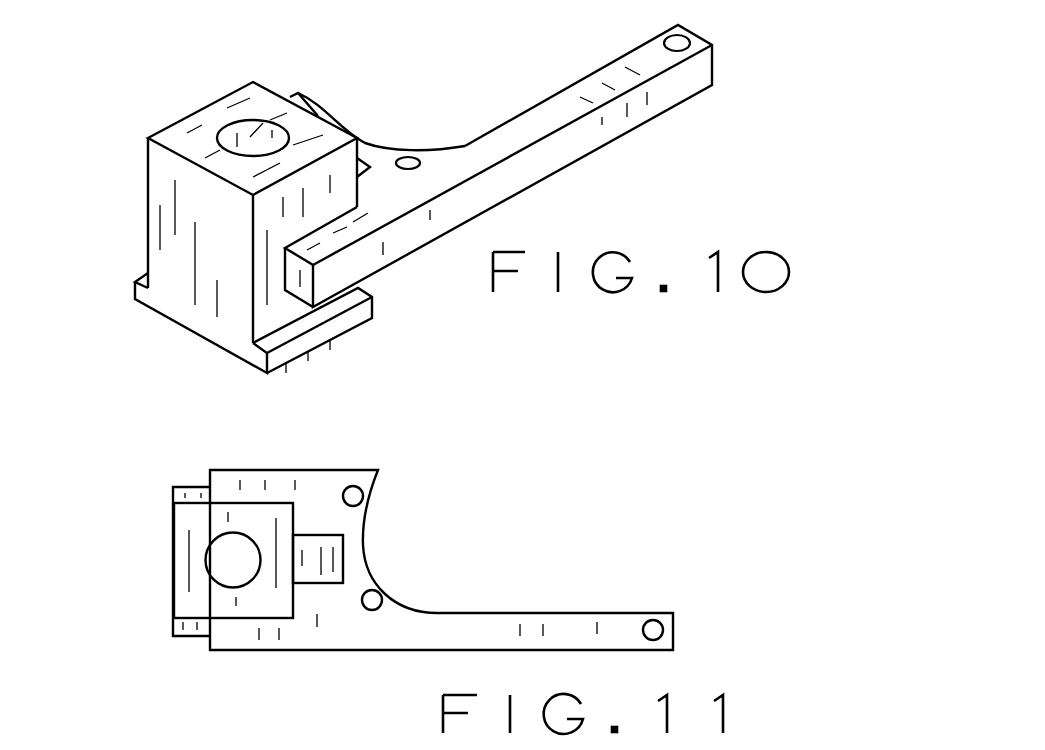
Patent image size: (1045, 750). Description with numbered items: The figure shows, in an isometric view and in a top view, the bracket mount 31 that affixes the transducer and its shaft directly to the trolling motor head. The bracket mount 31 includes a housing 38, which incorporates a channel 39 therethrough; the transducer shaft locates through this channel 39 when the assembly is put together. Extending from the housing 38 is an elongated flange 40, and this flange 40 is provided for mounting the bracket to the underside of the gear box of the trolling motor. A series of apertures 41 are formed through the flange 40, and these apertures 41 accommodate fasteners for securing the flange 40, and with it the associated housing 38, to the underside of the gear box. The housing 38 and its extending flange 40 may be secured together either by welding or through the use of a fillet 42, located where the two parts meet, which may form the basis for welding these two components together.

In FIG. 10, the bracket mount 31 is at (150, 175).
In FIG. 10, the housing 38 is at (175, 220).
In FIG. 11, the housing 38 is at (173, 577).
In FIG. 10, the channel 39 is at (246, 136).
In FIG. 10, the extending flange 40 is at (462, 145).
In FIG. 11, the extending flange 40 is at (560, 613).
In FIG. 10, the apertures 41 is at (408, 158).
In FIG. 11, the fillet 42 is at (325, 562).